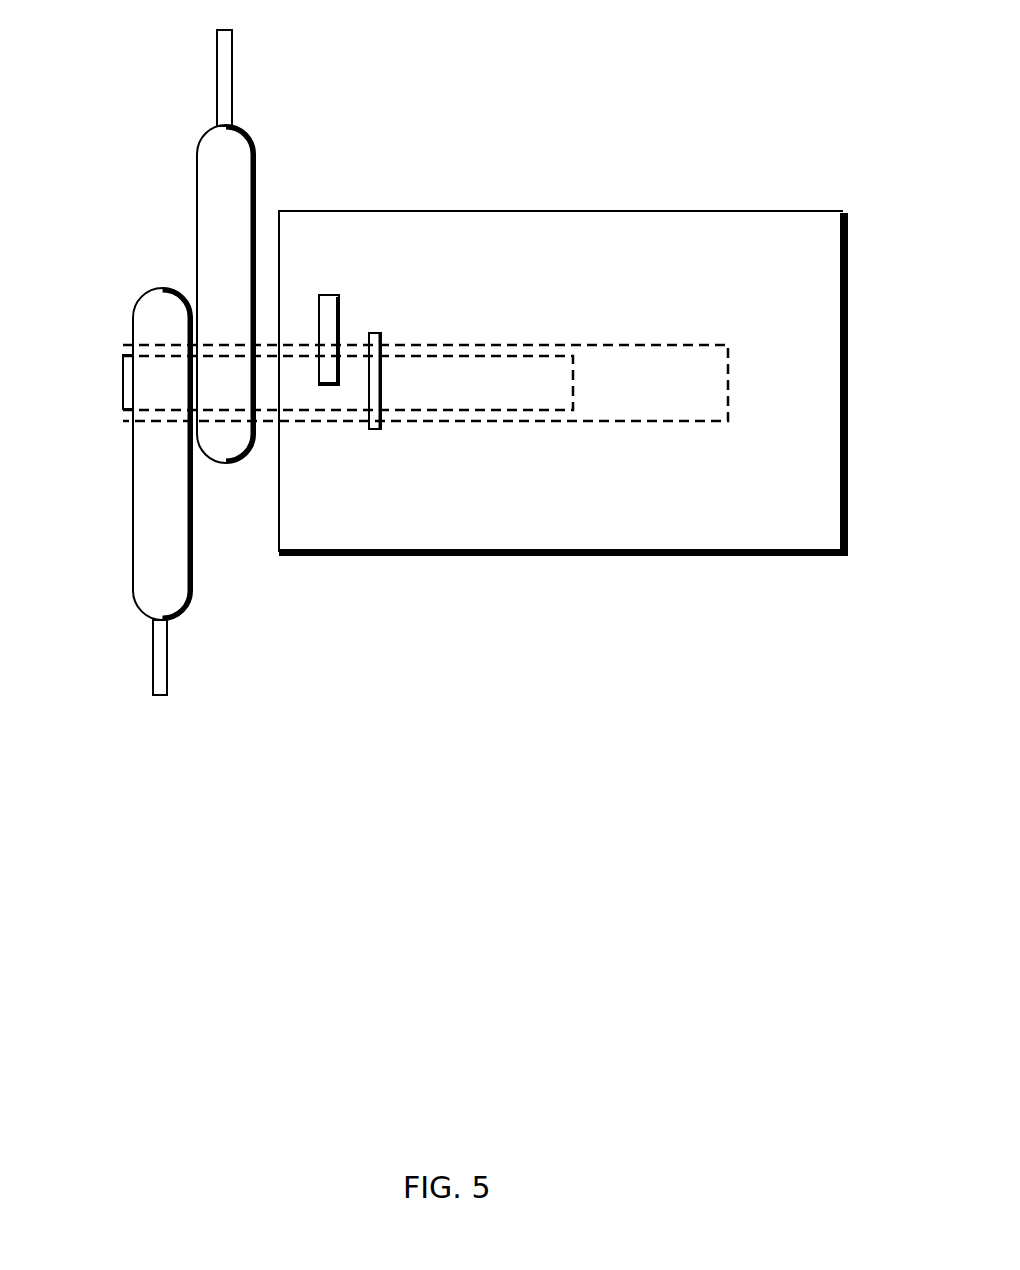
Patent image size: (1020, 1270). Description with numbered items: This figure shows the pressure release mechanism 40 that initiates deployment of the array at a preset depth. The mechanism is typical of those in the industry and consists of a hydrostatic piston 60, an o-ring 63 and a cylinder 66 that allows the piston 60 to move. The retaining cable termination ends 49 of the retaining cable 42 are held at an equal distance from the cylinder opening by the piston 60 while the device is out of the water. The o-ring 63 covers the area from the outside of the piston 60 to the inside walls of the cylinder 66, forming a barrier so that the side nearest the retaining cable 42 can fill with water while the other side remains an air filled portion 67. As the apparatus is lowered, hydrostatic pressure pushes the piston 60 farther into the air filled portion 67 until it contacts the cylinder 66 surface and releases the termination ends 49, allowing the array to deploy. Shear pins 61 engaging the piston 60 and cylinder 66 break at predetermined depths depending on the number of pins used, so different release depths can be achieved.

The pressure release mechanism 40 is at (602, 211).
The retaining cable 42 is at (232, 88).
The retaining cable termination ends 49 is at (195, 171).
The hydrostatic piston 60 is at (122, 370).
The shear pins 61 is at (333, 293).
The o-ring 63 is at (382, 330).
The cylinder 66 is at (730, 383).
The air filled portion 67 is at (615, 397).